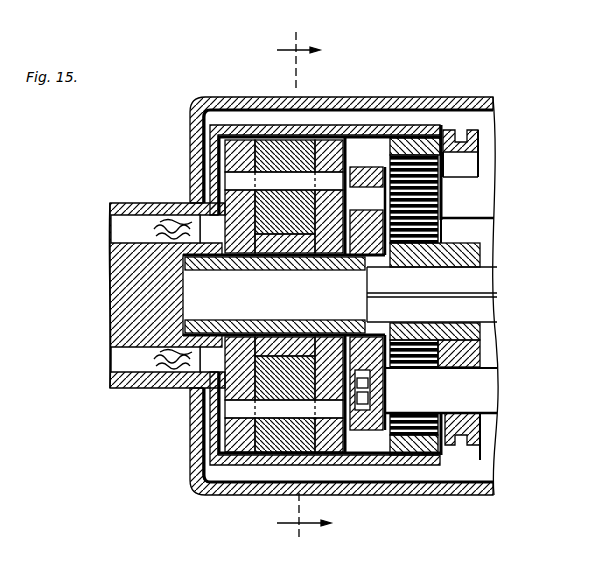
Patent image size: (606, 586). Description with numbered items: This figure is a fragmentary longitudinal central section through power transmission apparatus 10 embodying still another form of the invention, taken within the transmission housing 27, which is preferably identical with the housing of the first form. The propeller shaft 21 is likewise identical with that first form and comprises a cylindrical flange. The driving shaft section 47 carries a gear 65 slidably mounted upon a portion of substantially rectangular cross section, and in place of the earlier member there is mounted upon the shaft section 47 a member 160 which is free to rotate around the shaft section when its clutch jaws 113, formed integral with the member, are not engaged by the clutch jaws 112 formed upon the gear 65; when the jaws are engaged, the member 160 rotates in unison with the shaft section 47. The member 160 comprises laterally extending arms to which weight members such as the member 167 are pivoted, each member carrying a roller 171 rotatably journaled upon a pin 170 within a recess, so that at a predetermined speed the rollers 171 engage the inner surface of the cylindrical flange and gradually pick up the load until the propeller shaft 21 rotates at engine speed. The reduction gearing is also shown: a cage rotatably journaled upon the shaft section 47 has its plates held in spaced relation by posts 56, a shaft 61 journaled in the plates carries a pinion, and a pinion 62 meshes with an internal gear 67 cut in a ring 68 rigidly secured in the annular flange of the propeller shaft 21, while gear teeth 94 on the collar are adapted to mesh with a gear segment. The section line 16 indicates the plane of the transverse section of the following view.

The section line 16- 16 is at (304, 285).
The transmission housing 27 is at (400, 104).
The inner housing 10 is at (318, 127).
The propeller shaft 21 is at (120, 271).
The pin 170 is at (240, 185).
The weight member 167 is at (238, 148).
The roller 171 is at (278, 152).
The member 160 is at (248, 327).
The clutch jaws 112 is at (396, 268).
The clutch jaws 113 is at (383, 322).
The shaft section 47 is at (480, 293).
The ring 68 is at (421, 137).
The pinion 62 is at (440, 192).
The gear teeth 94 is at (446, 130).
The internal gear 67 is at (443, 161).
The shaft 61 is at (494, 213).
The gear 65 is at (418, 338).
The posts 56 is at (500, 400).